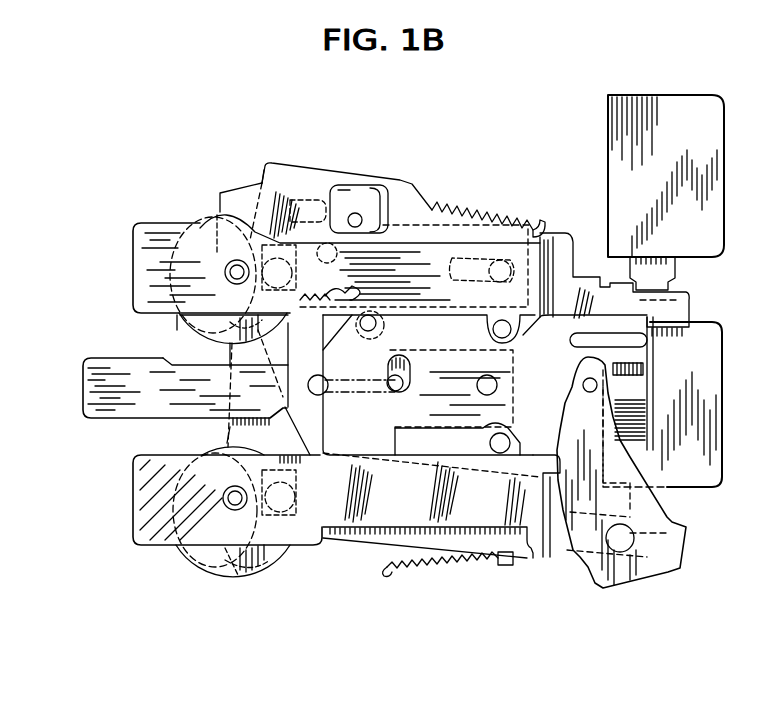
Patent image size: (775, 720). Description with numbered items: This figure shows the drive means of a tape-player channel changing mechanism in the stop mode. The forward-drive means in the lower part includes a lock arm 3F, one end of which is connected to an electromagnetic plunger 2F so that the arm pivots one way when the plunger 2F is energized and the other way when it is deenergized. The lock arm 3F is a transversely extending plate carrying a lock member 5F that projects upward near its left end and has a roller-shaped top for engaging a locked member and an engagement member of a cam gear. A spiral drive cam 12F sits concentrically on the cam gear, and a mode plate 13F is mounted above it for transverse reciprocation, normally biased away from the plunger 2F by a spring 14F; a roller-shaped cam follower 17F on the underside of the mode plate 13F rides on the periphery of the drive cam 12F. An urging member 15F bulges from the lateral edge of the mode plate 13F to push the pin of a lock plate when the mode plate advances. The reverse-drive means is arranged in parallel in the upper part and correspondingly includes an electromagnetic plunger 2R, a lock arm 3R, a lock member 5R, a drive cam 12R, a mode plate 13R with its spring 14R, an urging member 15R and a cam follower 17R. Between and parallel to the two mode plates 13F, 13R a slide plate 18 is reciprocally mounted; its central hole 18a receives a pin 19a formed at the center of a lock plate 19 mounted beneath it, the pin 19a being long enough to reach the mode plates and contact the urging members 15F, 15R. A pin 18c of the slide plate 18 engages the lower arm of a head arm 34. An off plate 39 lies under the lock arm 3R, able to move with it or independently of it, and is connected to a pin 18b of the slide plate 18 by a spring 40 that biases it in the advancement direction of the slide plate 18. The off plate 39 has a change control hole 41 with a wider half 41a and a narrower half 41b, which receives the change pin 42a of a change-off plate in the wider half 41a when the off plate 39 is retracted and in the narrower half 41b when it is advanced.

The electromagnetic plunger 2R is at (612, 128).
The electromagnetic plunger 2F is at (707, 334).
The lock arm 3R is at (242, 202).
The lock arm 3F is at (240, 428).
The lock member 5R is at (180, 328).
The lock member 5F is at (231, 563).
The rear cam 12R is at (198, 232).
The spiral drive cam 12F is at (277, 570).
The mode plate 13R is at (142, 268).
The mode plate 13F is at (143, 493).
The rear spring 14R is at (490, 212).
The spring 14F is at (457, 560).
The urging member 15R is at (398, 401).
The urging member 15F is at (441, 490).
The cam follower 17R is at (292, 276).
The cam follower 17F is at (290, 497).
The slide plate 18 is at (97, 400).
The hole 18a is at (408, 362).
The pin 18b is at (377, 325).
The pin 18c is at (597, 383).
The lock plate 19 is at (481, 443).
The pin 19a is at (403, 385).
The head arm 34 is at (648, 565).
The off plate 39 is at (290, 168).
The spring 40 is at (338, 293).
The change control hole 41 is at (388, 215).
The wider half 41a is at (362, 198).
The narrower half 41b is at (264, 170).
The change pin 42a is at (358, 227).